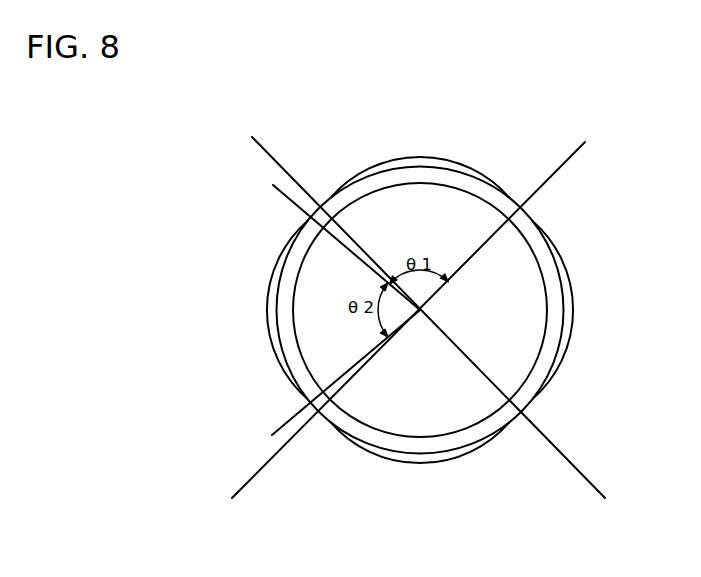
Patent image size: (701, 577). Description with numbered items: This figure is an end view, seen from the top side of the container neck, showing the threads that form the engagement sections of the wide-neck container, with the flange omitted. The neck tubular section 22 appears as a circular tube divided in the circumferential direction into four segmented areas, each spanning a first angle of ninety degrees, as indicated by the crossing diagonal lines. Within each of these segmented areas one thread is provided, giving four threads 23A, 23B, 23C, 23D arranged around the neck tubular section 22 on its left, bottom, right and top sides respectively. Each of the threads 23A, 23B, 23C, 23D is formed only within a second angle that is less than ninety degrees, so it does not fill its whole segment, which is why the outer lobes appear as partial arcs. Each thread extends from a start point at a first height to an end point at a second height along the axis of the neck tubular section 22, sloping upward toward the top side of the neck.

The neck tubular section 22 is at (380, 431).
The thread 23A is at (268, 322).
The thread 23B is at (413, 466).
The thread 23C is at (574, 322).
The thread 23D is at (435, 153).